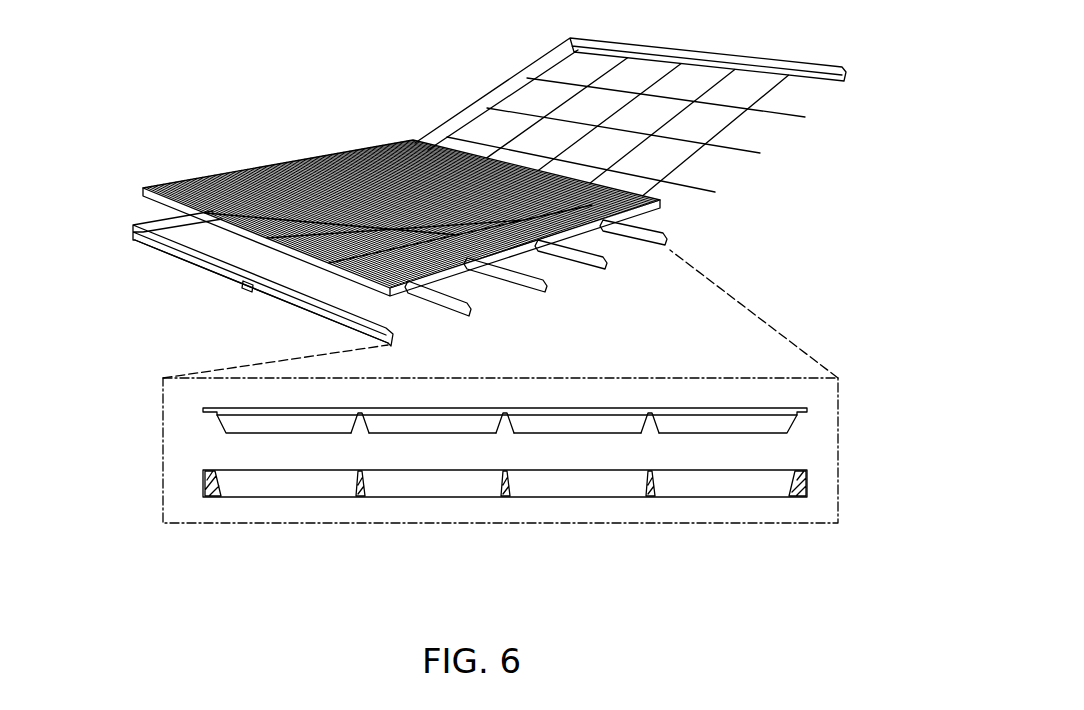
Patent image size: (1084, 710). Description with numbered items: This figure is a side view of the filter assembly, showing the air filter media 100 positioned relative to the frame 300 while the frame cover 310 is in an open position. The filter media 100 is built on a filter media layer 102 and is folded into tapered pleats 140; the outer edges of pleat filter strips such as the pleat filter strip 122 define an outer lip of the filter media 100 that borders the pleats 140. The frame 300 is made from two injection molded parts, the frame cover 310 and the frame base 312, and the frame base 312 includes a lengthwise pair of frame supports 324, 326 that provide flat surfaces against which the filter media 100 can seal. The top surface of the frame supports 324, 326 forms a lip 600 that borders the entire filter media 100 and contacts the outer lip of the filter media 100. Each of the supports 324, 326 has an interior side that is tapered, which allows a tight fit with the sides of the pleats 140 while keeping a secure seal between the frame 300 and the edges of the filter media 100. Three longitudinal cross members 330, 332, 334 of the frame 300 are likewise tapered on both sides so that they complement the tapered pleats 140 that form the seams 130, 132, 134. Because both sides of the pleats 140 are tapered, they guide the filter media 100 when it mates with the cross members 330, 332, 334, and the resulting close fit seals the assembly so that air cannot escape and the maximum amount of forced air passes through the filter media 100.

The air filter media 100 is at (305, 130).
The filter media layer 102 is at (247, 167).
The pleat filter strip 122 is at (256, 407).
The seam 130 is at (660, 422).
The seam 132 is at (497, 430).
The seam 134 is at (368, 422).
The pleats 140 is at (410, 428).
The frame 300 is at (452, 72).
The frame cover 310 is at (727, 58).
The frame base 312 is at (133, 230).
The frame support 324 is at (670, 240).
The frame support 326 is at (200, 268).
The cross member 330 is at (608, 266).
The cross member 332 is at (546, 290).
The cross member 334 is at (470, 312).
The lip 600 is at (203, 470).